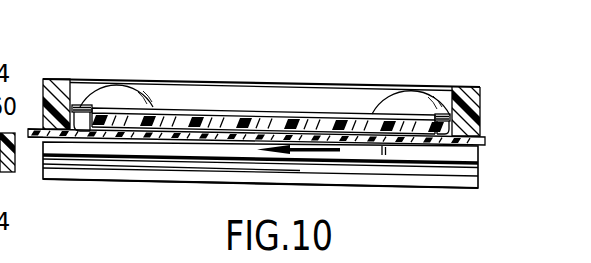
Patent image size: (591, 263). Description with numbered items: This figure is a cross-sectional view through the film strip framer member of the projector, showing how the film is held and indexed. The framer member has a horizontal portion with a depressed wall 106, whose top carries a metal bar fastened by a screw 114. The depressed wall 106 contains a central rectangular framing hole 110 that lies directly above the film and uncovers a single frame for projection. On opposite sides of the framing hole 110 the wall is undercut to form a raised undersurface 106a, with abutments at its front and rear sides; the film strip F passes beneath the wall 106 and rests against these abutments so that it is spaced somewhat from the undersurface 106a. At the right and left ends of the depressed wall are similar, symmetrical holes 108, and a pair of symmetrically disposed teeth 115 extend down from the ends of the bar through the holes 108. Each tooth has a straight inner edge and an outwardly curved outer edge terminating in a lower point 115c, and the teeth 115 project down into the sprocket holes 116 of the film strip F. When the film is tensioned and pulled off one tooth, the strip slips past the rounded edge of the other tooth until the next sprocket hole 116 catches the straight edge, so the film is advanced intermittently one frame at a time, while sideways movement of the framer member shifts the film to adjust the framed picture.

The depressed wall 106 is at (256, 129).
The raised undersurface 106a is at (198, 142).
The holes 108 is at (107, 116).
The central rectangular framing hole 110 is at (275, 126).
The screw 114 is at (133, 92).
The teeth 115 is at (274, 116).
The lower points 115c is at (91, 126).
The sprocket holes 116 is at (81, 125).
The film strip F is at (32, 134).